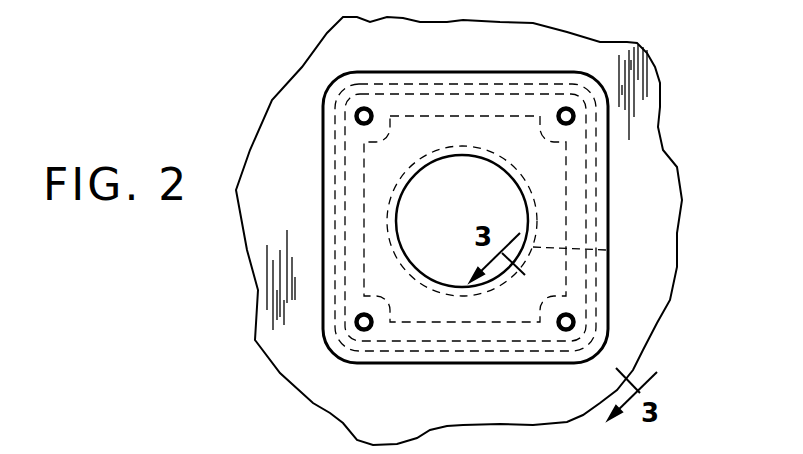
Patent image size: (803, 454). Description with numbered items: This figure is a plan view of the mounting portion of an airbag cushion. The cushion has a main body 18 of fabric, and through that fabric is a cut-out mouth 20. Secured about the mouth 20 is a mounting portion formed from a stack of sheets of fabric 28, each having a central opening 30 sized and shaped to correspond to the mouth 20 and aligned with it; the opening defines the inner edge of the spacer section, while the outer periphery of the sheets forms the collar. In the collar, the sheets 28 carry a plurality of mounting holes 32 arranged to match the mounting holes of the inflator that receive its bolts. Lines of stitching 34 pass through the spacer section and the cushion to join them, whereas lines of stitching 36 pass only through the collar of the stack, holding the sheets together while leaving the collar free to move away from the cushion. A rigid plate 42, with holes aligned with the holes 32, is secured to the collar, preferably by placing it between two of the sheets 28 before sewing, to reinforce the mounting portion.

The main body 18 is at (652, 100).
The mouth 20 is at (403, 250).
The sheets of fabric 28 is at (610, 163).
The central opening 30 is at (518, 189).
The mounting holes 32 is at (567, 113).
The lines of stitching 34 is at (614, 252).
The lines of stitching 36 is at (337, 187).
The rigid plate 42 is at (455, 344).